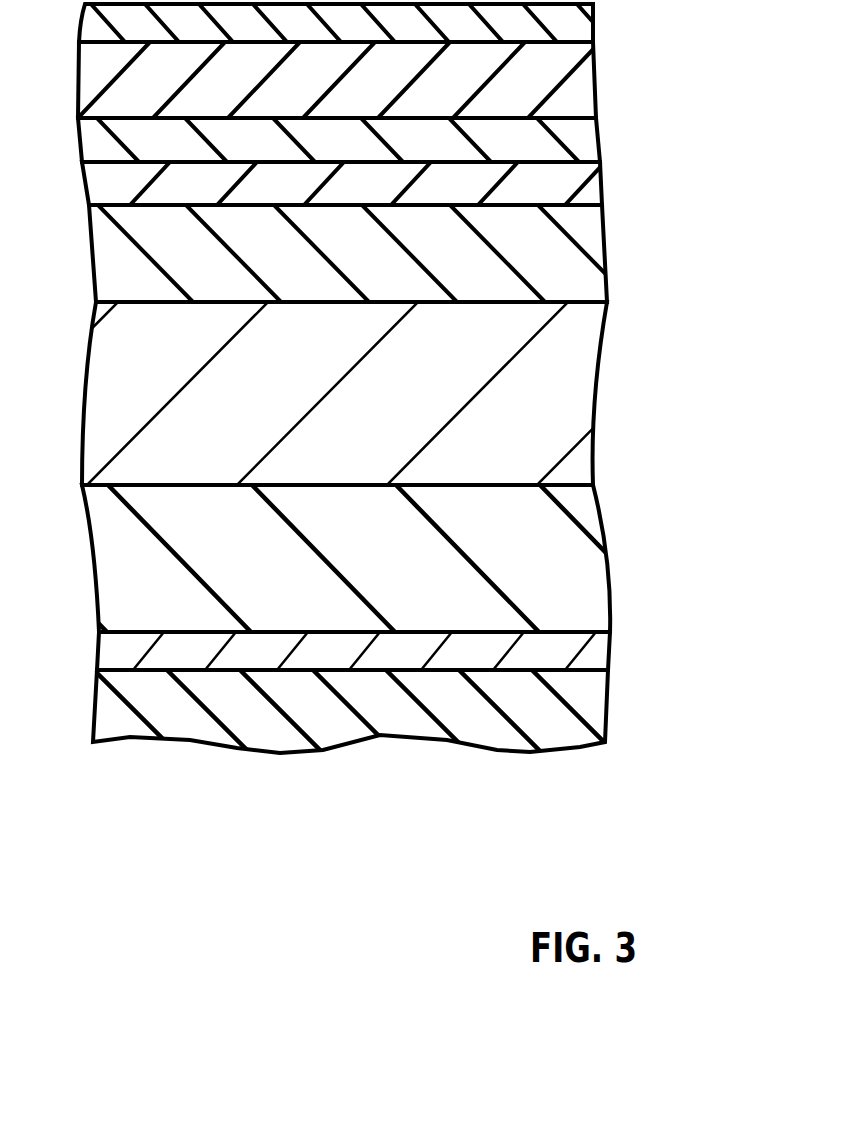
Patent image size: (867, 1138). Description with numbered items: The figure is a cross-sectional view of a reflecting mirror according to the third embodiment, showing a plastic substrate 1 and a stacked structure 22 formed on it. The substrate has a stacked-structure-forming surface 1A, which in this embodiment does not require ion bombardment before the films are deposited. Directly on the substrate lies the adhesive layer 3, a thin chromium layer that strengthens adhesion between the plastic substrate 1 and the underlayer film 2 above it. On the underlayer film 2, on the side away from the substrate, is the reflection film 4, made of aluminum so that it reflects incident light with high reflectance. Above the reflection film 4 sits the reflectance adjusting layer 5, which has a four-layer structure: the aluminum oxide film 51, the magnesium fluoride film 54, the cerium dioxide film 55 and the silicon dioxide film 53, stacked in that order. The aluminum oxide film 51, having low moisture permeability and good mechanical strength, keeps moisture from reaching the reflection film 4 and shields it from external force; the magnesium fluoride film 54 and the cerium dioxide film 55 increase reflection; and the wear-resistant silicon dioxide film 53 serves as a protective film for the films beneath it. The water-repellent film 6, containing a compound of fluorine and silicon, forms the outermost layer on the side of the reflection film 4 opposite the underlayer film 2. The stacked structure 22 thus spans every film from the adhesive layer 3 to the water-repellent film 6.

The plastic substrate 1 is at (590, 690).
The stacked-structure-forming surface 1A is at (127, 667).
The underlayer film 2 is at (583, 573).
The adhesive layer 3 is at (590, 647).
The reflection film 4 is at (583, 410).
The reflectance adjusting layer 5 is at (692, 62).
The aluminum oxide film 51 is at (578, 255).
The silicon dioxide film 53 is at (578, 77).
The magnesium fluoride film 54 is at (568, 186).
The cerium dioxide film 55 is at (578, 142).
The water-repellent film 6 is at (565, 26).
The stacked structure 22 is at (747, 3).